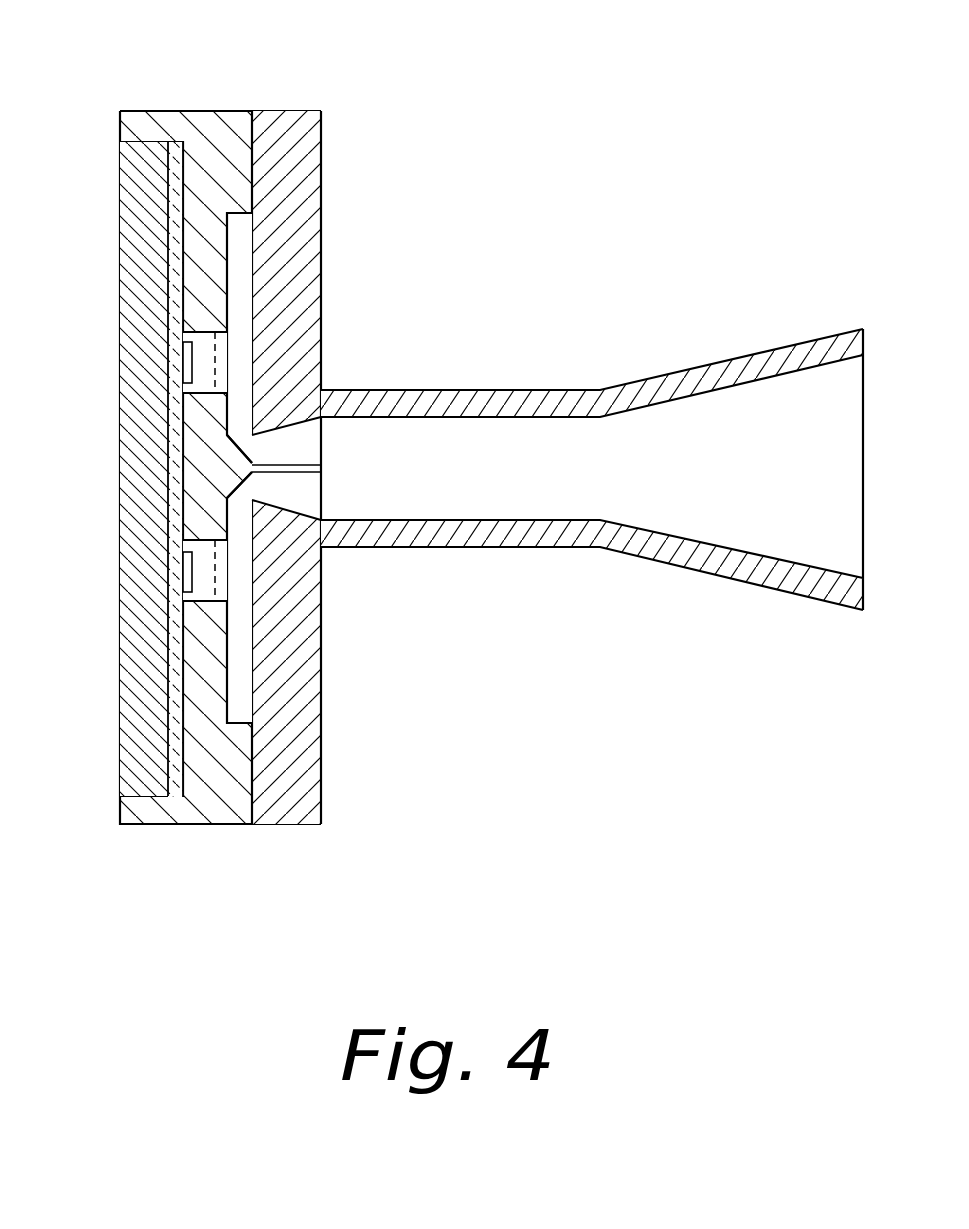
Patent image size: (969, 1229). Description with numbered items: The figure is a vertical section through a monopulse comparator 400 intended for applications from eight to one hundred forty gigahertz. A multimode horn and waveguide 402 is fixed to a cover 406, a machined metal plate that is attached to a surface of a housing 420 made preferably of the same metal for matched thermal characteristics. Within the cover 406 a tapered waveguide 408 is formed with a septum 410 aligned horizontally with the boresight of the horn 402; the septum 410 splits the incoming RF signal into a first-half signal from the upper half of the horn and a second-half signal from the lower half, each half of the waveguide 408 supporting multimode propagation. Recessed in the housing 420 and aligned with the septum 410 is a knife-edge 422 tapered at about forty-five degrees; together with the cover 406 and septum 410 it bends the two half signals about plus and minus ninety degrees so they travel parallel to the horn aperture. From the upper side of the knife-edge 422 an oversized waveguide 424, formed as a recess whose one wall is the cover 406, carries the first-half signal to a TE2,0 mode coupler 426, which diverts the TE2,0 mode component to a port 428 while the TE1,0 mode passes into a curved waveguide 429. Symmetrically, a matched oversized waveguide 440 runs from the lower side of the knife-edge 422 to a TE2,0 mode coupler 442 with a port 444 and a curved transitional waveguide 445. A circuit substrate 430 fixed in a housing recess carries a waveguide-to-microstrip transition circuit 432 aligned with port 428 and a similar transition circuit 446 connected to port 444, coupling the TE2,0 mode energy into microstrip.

The monopulse comparator 400 is at (447, 452).
The multimode horn and waveguide 402 is at (767, 578).
The cover 406 is at (288, 810).
The tapered waveguide 408 is at (290, 463).
The septum 410 is at (293, 472).
The housing 420 is at (167, 125).
The knife-edge 422 is at (252, 437).
The oversized waveguide 424 is at (144, 451).
The TE2,0 mode coupler 426 is at (218, 356).
The port 428 is at (129, 289).
The curved waveguide 429 is at (144, 326).
The circuit substrate 430 is at (177, 702).
The waveguide-to-microstrip transition circuit 432 is at (115, 385).
The oversized waveguide 440 is at (143, 529).
The TE2,0 mode coupler 442 is at (220, 570).
The port 444 is at (301, 652).
The curved transitional waveguide 445 is at (328, 645).
The waveguide-to-microstrip transition circuit 446 is at (115, 597).